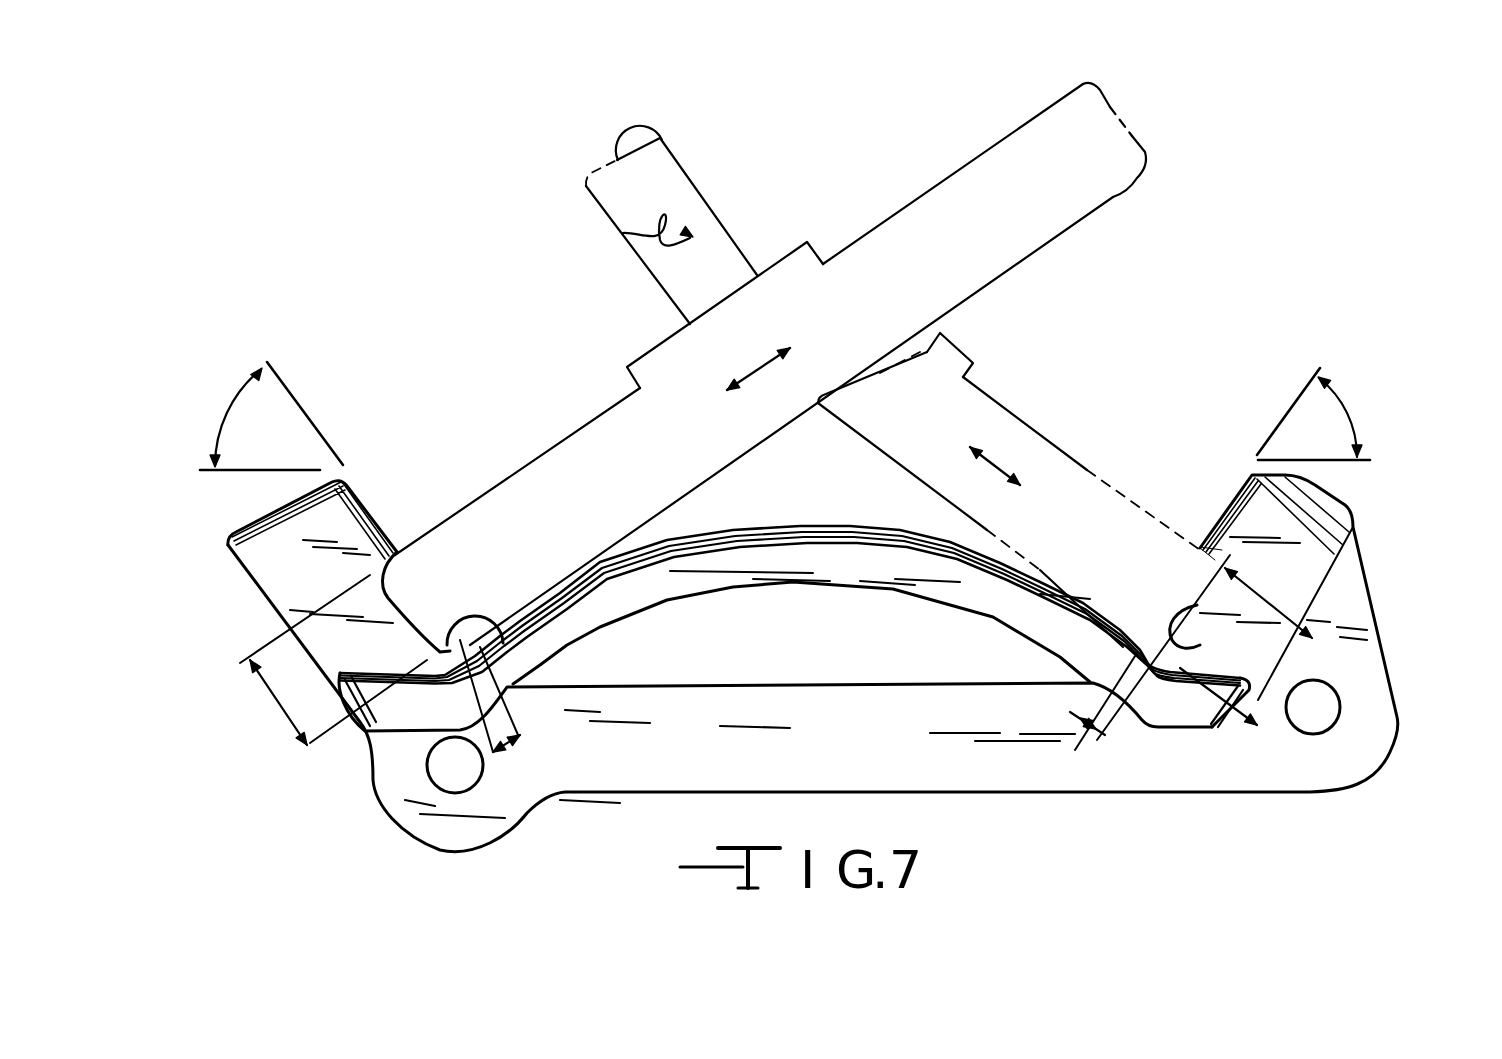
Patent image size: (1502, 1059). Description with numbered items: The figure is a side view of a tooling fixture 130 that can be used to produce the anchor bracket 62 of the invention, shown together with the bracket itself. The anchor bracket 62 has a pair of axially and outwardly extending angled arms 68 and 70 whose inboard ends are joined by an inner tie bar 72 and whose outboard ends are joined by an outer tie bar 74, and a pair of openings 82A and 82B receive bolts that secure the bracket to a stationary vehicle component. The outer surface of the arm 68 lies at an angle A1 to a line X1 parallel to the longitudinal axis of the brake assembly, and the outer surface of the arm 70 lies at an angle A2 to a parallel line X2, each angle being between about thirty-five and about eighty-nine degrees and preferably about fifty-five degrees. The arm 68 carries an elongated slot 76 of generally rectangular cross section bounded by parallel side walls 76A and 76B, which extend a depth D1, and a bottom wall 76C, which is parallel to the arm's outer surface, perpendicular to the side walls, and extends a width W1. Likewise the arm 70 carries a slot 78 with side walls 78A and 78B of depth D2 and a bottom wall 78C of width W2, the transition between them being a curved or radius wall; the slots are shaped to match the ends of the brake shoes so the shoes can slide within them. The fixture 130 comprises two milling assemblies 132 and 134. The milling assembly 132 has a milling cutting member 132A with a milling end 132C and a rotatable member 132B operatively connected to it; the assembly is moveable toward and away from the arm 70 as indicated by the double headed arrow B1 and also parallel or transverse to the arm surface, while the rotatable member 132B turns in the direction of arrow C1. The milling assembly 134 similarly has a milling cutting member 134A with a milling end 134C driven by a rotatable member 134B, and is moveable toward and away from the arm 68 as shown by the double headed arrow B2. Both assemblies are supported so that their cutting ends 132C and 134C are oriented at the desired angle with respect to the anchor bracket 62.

The anchor bracket 62 is at (826, 638).
The angled arm 68 is at (1315, 572).
The angled arm 70 is at (277, 587).
The inner tie bar 72 is at (978, 763).
The outer tie bar 74 is at (790, 560).
The slot 76 is at (1174, 575).
The side wall 76A is at (1222, 550).
The side wall 76B is at (1173, 632).
The bottom wall 76C is at (1160, 669).
The slot 78 is at (528, 552).
The side wall 78A is at (396, 556).
The side wall 78B is at (482, 616).
The bottom wall 78C is at (398, 596).
The opening 82A is at (1327, 710).
The opening 82B is at (433, 782).
The fixture 130 is at (844, 365).
The milling assembly 132 is at (844, 364).
The milling cutting member 132A is at (578, 462).
The rotatable member 132B is at (672, 180).
The milling end 132C is at (1150, 136).
The milling assembly 134 is at (1012, 480).
The milling cutting member 134A is at (897, 455).
The rotatable member 134B is at (985, 362).
The milling end 134C is at (1215, 590).
The angle A1 is at (1347, 413).
The angle A2 is at (224, 422).
The line X1 is at (1333, 460).
The line X2 is at (222, 470).
The double headed arrow B1 is at (790, 350).
The double headed arrow B2 is at (997, 465).
The arrow C1 is at (623, 233).
The width W1 is at (1290, 668).
The width W2 is at (272, 693).
The depth D1 is at (1083, 742).
The depth D2 is at (500, 732).